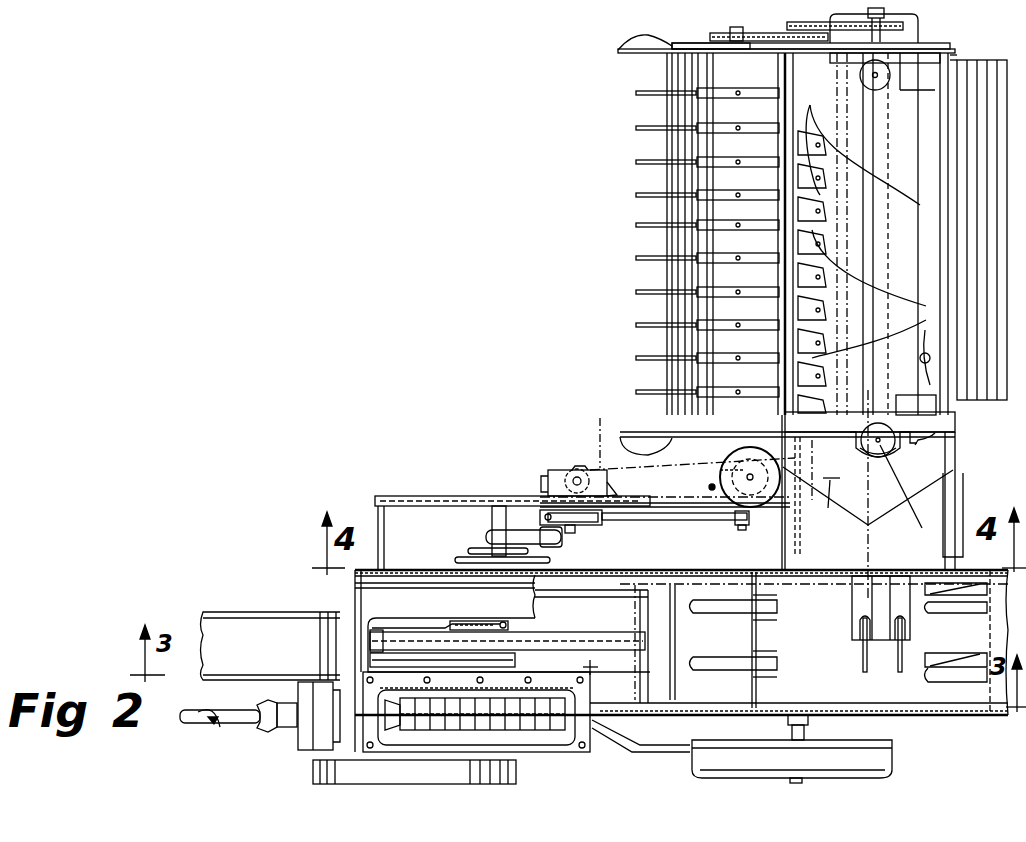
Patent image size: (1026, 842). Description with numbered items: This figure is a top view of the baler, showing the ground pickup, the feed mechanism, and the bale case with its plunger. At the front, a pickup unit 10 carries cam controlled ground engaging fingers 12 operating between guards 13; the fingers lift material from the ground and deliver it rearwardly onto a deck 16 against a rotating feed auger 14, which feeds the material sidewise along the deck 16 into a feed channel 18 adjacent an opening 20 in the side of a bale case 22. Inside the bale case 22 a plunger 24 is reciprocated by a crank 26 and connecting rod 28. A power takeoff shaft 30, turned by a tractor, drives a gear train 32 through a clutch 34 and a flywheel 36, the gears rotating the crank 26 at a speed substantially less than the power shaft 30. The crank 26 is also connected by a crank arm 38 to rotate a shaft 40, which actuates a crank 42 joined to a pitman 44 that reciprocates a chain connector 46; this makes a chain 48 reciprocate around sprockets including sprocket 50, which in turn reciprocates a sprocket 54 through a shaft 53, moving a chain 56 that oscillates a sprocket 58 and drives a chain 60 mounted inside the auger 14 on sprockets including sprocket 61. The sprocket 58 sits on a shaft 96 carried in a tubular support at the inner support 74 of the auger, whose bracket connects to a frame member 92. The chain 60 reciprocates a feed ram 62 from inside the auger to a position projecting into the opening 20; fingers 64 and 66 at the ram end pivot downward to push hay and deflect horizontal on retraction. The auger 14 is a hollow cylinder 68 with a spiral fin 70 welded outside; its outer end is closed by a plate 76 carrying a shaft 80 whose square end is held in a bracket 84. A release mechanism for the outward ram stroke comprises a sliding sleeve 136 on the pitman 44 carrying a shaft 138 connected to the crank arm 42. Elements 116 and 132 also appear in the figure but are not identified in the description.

The pickup unit 10 is at (610, 345).
The ground engaging fingers 12 is at (662, 290).
The guards 13 is at (700, 244).
The feed auger 14 is at (905, 98).
The deck 16 is at (790, 190).
The feed channel 18 is at (927, 465).
The opening 20 is at (940, 563).
The bale case 22 is at (938, 715).
The plunger 24 is at (688, 725).
The crank 26 is at (513, 657).
The connecting rod 28 is at (555, 640).
The power takeoff shaft 30 is at (228, 722).
The gear train 32 is at (525, 735).
The clutch 34 is at (300, 740).
The flywheel 36 is at (313, 776).
The crank arm 38 is at (410, 630).
The shaft 40 is at (500, 530).
The crank 42 is at (512, 530).
The pitman 44 is at (657, 518).
The chain connector 46 is at (712, 487).
The chain 48 is at (600, 440).
The sprocket 50 is at (578, 468).
The shaft 53 is at (752, 482).
The sprocket 54 is at (740, 455).
The chain 56 is at (828, 508).
The sprocket 58 is at (866, 445).
The chain 60 is at (900, 415).
The sprocket 61 is at (858, 72).
The feed ram 62 is at (840, 604).
The finger 64 is at (862, 657).
The finger 66 is at (900, 650).
The hollow cylinder 68 is at (920, 355).
The spiral fin 70 is at (805, 190).
The inner support 74 is at (928, 442).
The plate 76 is at (945, 45).
The shaft 80 is at (878, 6).
The bracket 84 is at (825, 12).
The frame member 92 is at (870, 422).
The shaft 96 is at (909, 489).
The disc 116 is at (490, 558).
The cover 132 is at (745, 18).
The sliding sleeve 136 is at (580, 525).
The shaft 138 is at (575, 535).